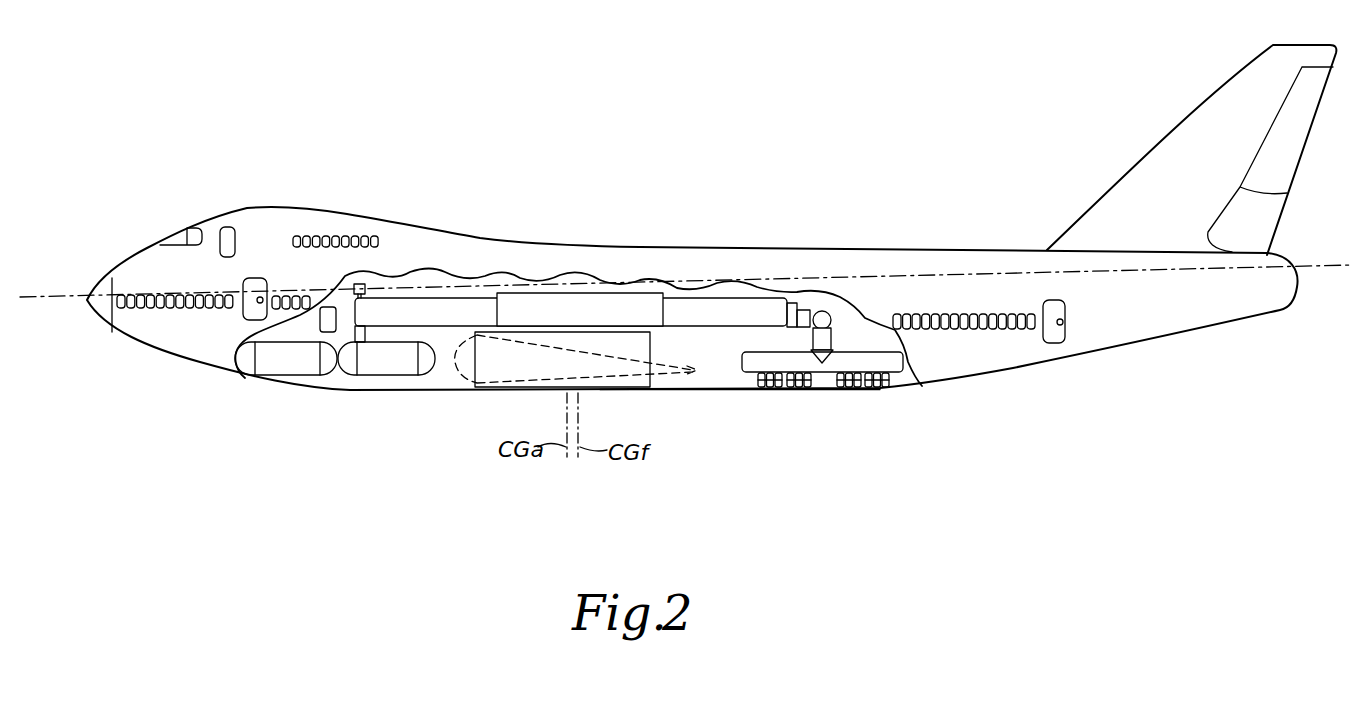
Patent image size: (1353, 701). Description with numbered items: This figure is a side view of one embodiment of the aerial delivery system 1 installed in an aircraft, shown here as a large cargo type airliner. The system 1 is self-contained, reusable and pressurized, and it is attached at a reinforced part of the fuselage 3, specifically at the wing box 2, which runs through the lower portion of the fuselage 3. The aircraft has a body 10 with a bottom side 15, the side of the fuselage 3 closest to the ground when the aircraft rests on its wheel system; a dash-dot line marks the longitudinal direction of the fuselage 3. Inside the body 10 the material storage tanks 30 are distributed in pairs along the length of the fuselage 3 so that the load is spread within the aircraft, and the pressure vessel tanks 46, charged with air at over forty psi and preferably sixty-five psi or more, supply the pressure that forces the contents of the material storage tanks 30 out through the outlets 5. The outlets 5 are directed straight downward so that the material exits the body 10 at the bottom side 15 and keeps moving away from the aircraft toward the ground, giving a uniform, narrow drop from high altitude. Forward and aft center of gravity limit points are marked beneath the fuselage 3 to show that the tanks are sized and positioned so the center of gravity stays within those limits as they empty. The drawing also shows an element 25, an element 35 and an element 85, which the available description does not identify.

The aerial delivery system 1 is at (675, 292).
The wing box 2 is at (650, 377).
The fuselage 3 is at (965, 273).
The outlets 5 is at (790, 393).
The body 10 is at (262, 220).
The bottom side 15 is at (715, 392).
The removed component outline 25 is at (456, 372).
The material storage tanks 30 is at (583, 305).
The discharge outlet 35 is at (827, 340).
The pressure vessel tanks 46 is at (285, 367).
The access port 85 is at (327, 307).